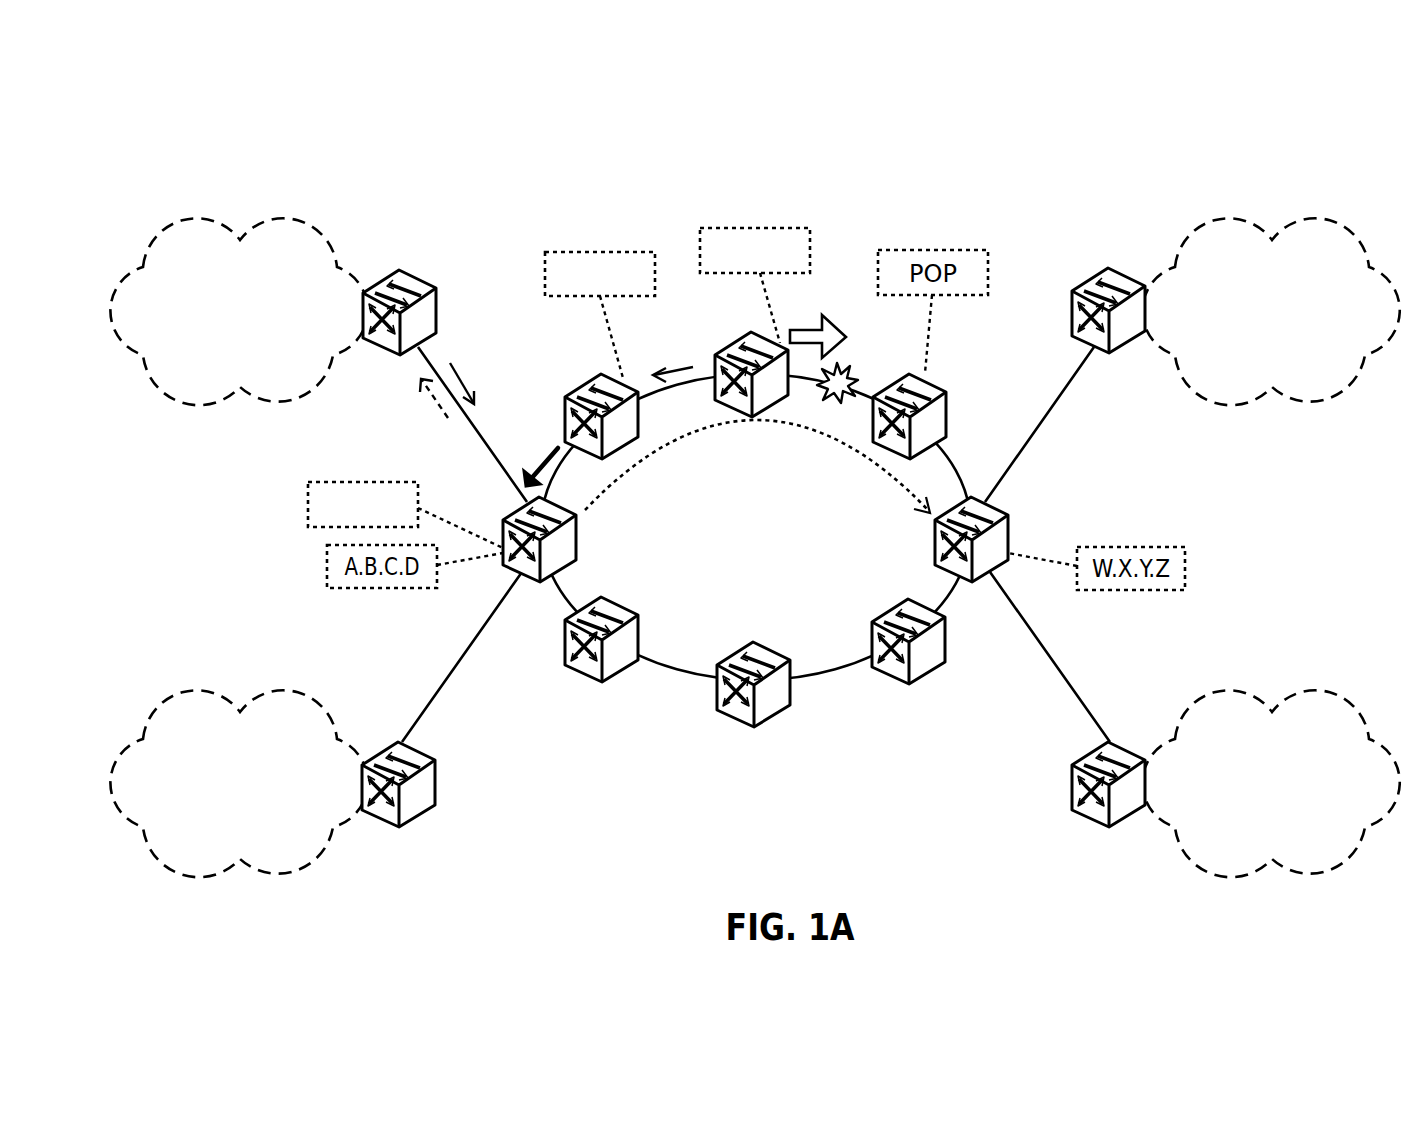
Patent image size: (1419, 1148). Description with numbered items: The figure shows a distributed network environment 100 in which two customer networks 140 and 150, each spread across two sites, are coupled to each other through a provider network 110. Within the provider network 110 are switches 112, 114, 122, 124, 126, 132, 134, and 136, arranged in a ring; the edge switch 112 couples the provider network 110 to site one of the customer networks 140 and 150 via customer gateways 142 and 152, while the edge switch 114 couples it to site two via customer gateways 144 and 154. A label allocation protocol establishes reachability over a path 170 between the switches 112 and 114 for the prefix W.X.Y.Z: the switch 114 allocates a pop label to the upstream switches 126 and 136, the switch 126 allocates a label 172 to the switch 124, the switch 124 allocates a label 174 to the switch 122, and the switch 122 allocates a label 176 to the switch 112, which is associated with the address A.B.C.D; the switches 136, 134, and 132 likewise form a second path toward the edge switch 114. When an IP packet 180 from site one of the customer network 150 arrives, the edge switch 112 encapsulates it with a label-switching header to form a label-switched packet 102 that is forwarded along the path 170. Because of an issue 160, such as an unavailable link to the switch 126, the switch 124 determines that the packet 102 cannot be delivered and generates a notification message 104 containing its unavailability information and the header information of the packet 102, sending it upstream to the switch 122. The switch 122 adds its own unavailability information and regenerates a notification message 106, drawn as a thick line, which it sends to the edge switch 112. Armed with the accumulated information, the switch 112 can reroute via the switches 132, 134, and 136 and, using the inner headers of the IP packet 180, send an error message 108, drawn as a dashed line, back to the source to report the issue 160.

The distributed network environment 100 is at (300, 182).
The packet 102 is at (814, 328).
The notification message 104 is at (668, 366).
The notification message 106 is at (533, 472).
The error message 108 is at (431, 397).
The provider network 110 is at (740, 569).
The edge switch 112 is at (516, 541).
The edge switch 114 is at (1010, 540).
The switch 122 is at (568, 411).
The switch 124 is at (772, 335).
The switch 126 is at (950, 421).
The switch 132 is at (567, 650).
The switch 134 is at (780, 713).
The switch 136 is at (947, 644).
The customer network 140 is at (1283, 809).
The customer gateway 142 is at (416, 822).
The customer gateway 144 is at (1118, 741).
The customer network 150 is at (1283, 337).
The customer gateway 152 is at (406, 268).
The customer gateway 154 is at (1125, 270).
The issue 160 is at (848, 367).
The path 170 is at (784, 431).
The label 172 is at (738, 264).
The label 174 is at (583, 286).
The label 176 is at (346, 519).
The IP packet 180 is at (463, 383).